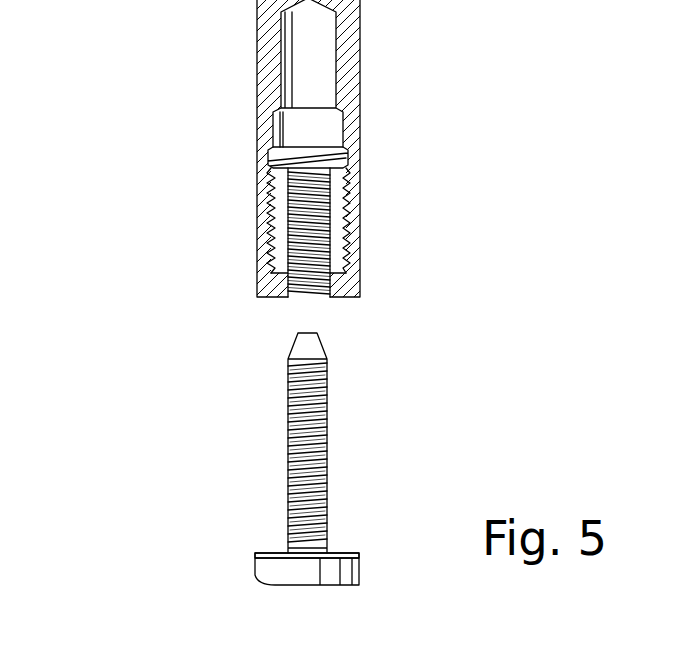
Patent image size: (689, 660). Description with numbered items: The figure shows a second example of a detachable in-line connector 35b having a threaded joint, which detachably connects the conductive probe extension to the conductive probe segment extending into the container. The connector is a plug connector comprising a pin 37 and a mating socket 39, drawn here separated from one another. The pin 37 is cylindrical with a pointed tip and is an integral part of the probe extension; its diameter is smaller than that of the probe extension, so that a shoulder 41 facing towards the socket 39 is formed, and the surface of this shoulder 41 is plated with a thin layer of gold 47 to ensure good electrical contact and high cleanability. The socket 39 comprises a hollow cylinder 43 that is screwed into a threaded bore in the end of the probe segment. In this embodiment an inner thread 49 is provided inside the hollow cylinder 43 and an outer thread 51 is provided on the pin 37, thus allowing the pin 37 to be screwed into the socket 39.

The detachable in-line connector 35b is at (215, 98).
The pin 37 is at (310, 476).
The socket 39 is at (278, 232).
The shoulder 41 is at (352, 565).
The hollow cylinder 43 is at (345, 225).
The thin layer of gold 47 is at (272, 553).
The inner thread 49 is at (287, 203).
The outer thread 51 is at (327, 426).